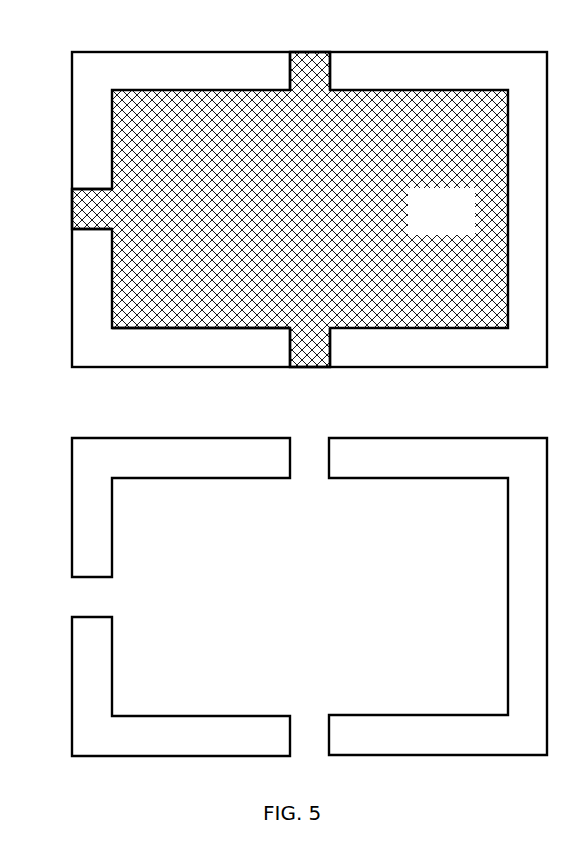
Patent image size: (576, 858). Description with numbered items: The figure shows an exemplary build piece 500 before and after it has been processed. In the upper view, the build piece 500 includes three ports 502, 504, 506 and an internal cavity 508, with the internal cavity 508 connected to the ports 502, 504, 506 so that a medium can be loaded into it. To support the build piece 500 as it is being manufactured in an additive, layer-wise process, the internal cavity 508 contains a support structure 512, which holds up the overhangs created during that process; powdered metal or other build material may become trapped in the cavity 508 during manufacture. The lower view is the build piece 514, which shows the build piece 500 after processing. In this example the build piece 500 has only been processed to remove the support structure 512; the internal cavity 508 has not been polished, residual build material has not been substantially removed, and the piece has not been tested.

The build piece 500 is at (183, 52).
The port 502 is at (307, 52).
The port 504 is at (327, 368).
The port 506 is at (72, 205).
The internal cavity 508 is at (290, 329).
The support structure 512 is at (203, 329).
The build piece 514 is at (180, 438).